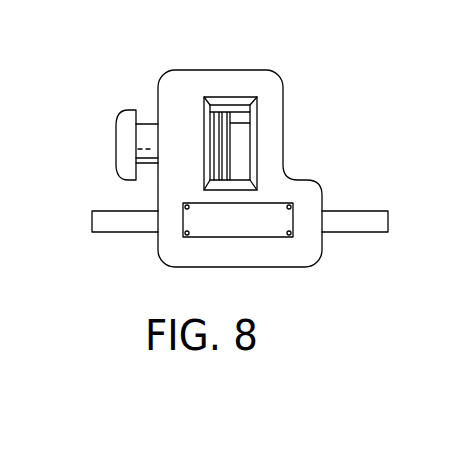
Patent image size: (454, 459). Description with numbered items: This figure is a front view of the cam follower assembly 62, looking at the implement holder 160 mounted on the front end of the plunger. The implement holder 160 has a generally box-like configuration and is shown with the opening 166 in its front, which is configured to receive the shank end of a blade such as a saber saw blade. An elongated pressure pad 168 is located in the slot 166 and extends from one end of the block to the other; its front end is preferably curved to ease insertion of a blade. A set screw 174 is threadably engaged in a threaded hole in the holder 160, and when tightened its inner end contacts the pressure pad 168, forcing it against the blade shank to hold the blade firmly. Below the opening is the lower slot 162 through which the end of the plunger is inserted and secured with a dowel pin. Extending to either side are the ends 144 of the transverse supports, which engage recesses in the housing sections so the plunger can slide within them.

The cam follower assembly 62 is at (283, 47).
The implement holder 160 is at (203, 70).
The opening 166 is at (253, 137).
The pressure pad 168 is at (215, 152).
The set screw 174 is at (127, 139).
The ends 144 is at (115, 222).
The lower slot 162 is at (218, 237).